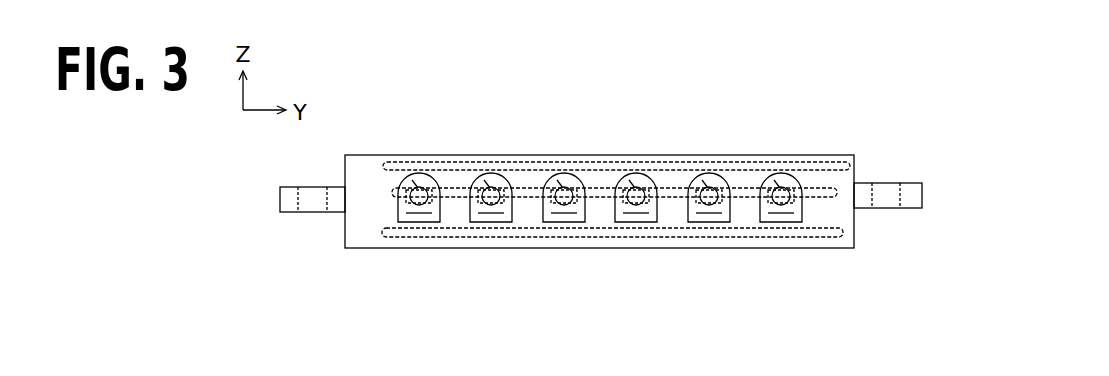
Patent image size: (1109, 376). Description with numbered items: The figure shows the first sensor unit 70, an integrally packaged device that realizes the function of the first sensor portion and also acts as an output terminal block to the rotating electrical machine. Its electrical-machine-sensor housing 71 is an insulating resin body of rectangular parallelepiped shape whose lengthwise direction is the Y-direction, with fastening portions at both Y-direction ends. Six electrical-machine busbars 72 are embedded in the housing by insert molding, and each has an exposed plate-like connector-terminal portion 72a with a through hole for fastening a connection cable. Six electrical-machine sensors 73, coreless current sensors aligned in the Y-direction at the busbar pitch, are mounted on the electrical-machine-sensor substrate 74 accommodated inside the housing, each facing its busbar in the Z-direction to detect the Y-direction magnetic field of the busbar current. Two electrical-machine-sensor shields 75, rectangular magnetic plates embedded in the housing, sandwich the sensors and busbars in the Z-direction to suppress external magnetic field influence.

The first sensor unit 70 is at (829, 145).
The electrical-machine-sensor housing 71 is at (844, 166).
The electrical-machine busbar 72 is at (403, 222).
The connector-terminal portion 72a is at (413, 178).
The electrical-machine sensor 73 is at (427, 214).
The electrical-machine-sensor substrate 74 is at (839, 195).
The electrical-machine-sensor shield 75 is at (852, 157).